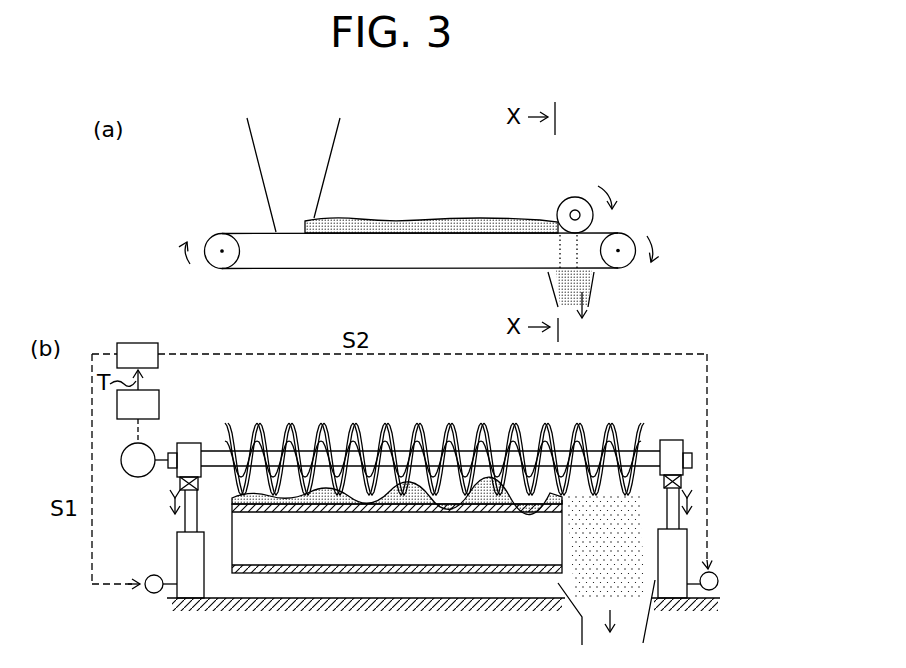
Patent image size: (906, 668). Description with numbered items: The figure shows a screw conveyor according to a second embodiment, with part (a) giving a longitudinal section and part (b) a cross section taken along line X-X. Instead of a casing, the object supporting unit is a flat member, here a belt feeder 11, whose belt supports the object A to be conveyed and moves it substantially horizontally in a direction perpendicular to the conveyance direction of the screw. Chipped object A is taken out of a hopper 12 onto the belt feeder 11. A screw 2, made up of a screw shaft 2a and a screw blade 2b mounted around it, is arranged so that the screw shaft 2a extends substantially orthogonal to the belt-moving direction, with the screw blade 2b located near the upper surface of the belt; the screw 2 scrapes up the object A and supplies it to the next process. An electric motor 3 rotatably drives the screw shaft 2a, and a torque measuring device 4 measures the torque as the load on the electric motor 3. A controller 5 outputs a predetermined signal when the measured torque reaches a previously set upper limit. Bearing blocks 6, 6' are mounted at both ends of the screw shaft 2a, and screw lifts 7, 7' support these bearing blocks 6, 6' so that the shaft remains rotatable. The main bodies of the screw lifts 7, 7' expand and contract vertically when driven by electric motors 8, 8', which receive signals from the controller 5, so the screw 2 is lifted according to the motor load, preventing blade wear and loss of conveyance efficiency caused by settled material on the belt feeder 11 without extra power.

The screw 2 is at (430, 317).
The screw shaft 2a is at (545, 452).
The screw blade 2b is at (578, 389).
The electric motor 3 is at (138, 478).
The torque measuring device 4 is at (159, 401).
The controller 5 is at (158, 345).
The bearing block 6 is at (676, 441).
The bearing block 6' is at (185, 444).
The screw lift 7 is at (706, 543).
The screw lift 7' is at (162, 544).
The electric motor 8 is at (722, 589).
The electric motor 8' is at (149, 603).
The belt feeder 11 is at (247, 232).
The hopper 12 is at (333, 151).
The object to be conveyed A is at (392, 222).